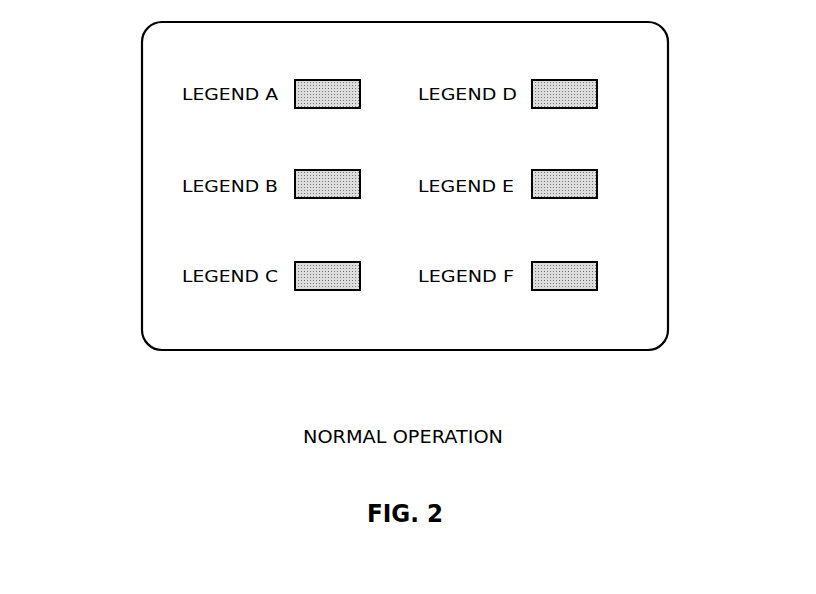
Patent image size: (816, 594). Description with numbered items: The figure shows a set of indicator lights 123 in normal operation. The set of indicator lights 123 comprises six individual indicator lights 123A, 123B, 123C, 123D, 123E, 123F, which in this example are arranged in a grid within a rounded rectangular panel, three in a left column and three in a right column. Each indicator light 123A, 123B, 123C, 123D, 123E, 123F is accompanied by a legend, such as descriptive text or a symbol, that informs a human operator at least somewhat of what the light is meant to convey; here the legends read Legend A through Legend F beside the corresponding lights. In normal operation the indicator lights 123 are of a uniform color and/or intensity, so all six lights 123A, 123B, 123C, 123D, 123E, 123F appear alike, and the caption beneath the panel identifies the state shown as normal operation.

The set of indicator lights 123 is at (104, 400).
The indicator light 123A is at (325, 108).
The indicator light 123B is at (325, 198).
The indicator light 123C is at (325, 290).
The indicator light 123D is at (597, 93).
The indicator light 123E is at (597, 185).
The indicator light 123F is at (597, 277).